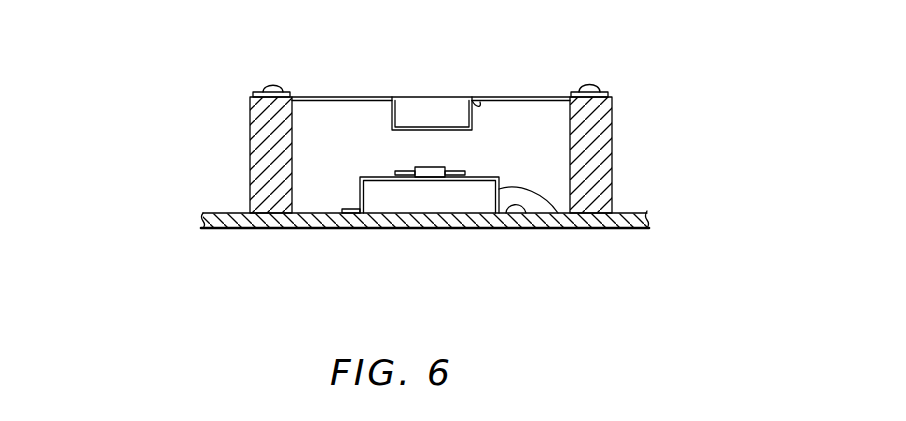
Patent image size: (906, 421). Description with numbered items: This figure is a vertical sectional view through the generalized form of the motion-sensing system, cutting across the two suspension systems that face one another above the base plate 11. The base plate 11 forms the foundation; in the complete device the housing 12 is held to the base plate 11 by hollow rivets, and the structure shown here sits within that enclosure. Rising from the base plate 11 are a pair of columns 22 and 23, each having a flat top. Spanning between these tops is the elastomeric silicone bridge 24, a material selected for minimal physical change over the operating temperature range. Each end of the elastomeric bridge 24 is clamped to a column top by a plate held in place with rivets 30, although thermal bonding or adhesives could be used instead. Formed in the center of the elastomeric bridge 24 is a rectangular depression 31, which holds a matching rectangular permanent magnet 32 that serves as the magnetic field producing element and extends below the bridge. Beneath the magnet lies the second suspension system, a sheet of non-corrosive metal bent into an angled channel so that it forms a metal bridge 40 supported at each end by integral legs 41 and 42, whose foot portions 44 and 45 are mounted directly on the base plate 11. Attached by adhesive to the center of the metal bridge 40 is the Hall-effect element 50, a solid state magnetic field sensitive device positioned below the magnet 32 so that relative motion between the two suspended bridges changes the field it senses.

The base plate 11 is at (227, 213).
The housing 12 is at (387, 181).
The column 22 is at (250, 152).
The column 23 is at (612, 155).
The elastomeric silicone bridge 24 is at (520, 97).
The rivet 30 is at (270, 83).
The depression 31 is at (480, 100).
The permanent magnet 32 is at (417, 105).
The metal bridge 40 is at (477, 181).
The leg 41 is at (364, 200).
The leg 42 is at (562, 212).
The foot portion 44 is at (348, 212).
The foot portion 45 is at (524, 212).
The Hall-effect element 50 is at (430, 168).